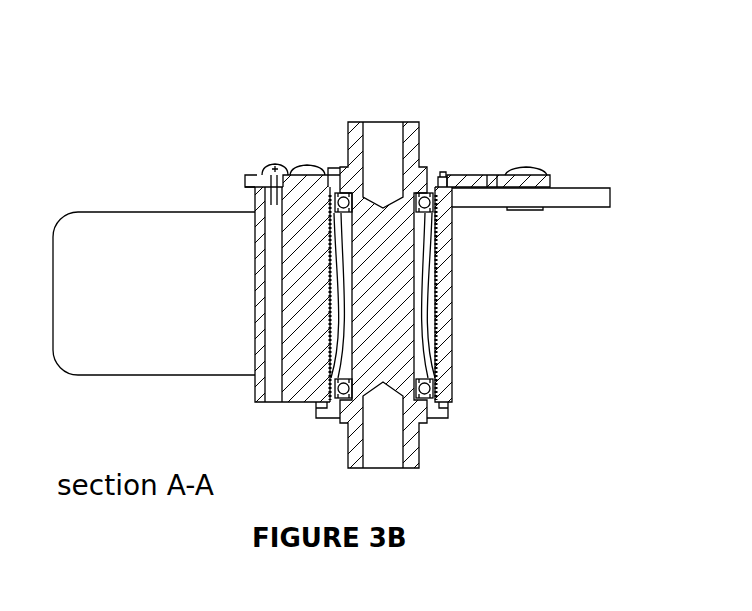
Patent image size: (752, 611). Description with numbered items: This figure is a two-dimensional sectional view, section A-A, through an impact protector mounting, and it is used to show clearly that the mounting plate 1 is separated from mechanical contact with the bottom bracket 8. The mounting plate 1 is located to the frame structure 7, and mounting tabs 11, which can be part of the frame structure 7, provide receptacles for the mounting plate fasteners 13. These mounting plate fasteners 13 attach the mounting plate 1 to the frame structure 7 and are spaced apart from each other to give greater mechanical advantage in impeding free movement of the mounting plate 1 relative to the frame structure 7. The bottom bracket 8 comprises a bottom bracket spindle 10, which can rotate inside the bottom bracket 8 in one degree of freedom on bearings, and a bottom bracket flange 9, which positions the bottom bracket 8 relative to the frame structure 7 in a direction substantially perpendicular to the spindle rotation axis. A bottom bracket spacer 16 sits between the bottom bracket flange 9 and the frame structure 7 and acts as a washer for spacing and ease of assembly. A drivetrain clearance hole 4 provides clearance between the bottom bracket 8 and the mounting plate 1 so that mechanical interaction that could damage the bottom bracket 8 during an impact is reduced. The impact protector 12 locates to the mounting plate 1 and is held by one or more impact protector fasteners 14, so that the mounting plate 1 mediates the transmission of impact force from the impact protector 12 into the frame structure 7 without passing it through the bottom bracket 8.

The mounting plate 1 is at (250, 173).
The drivetrain clearance hole 4 is at (457, 180).
The frame structure 7 is at (440, 330).
The bottom bracket 8 is at (430, 275).
The bottom bracket flange 9 is at (442, 178).
The bottom bracket spindle 10 is at (412, 127).
The mounting tab 11 is at (293, 401).
The impact protector 12 is at (570, 198).
The mounting plate fastener 13 is at (273, 164).
The impact protector fastener 14 is at (527, 168).
The bottom bracket spacer 16 is at (317, 185).